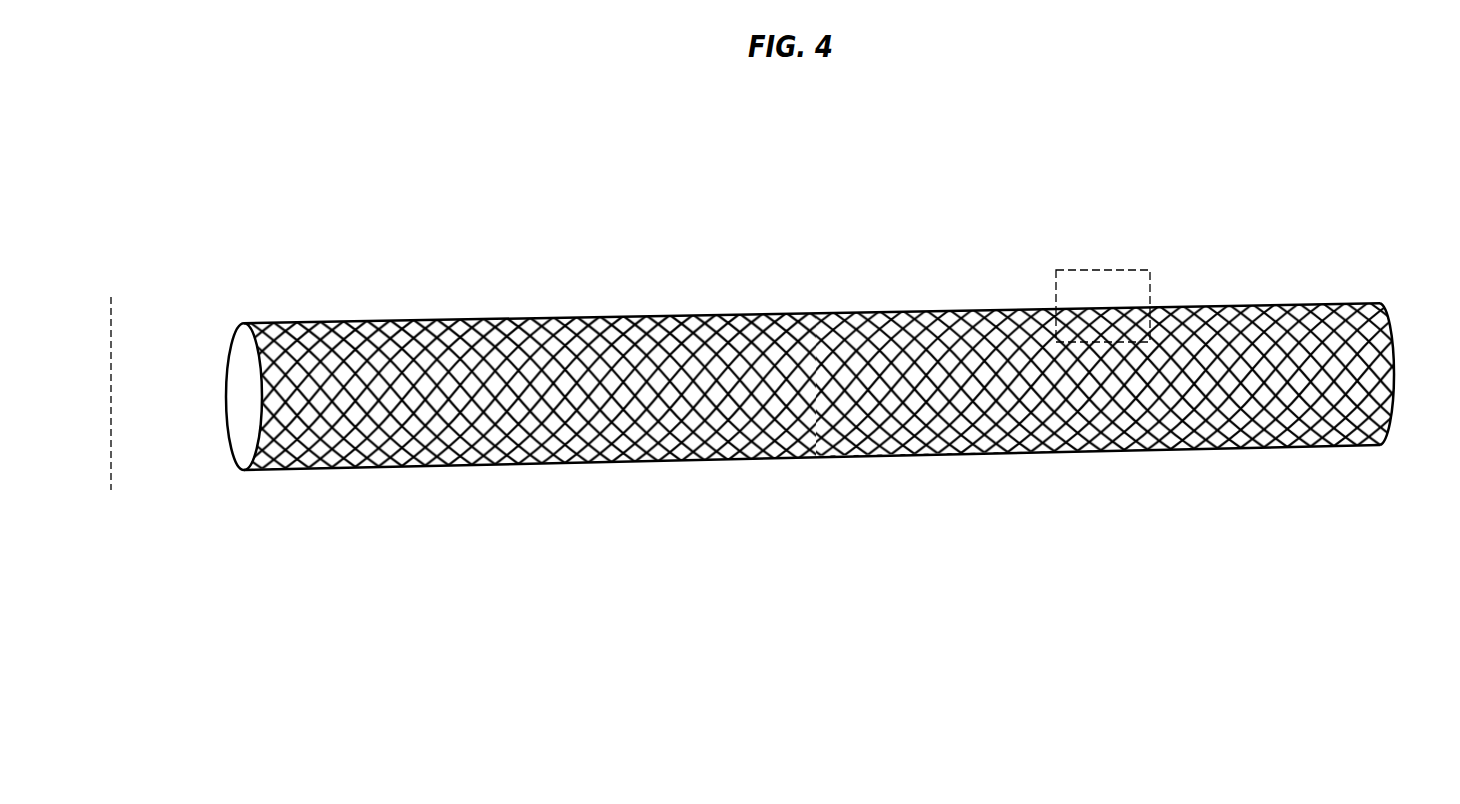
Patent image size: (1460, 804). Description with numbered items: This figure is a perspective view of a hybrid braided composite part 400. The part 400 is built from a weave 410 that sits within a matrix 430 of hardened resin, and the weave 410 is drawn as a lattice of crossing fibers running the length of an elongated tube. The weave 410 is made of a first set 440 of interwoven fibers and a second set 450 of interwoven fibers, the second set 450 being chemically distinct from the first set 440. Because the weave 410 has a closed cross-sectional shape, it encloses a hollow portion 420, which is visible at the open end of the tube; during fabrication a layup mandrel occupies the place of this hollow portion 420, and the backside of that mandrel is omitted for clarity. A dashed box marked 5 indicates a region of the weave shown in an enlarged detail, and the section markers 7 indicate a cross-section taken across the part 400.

The hybrid braided composite part 400 is at (781, 221).
The weave 410 is at (447, 318).
The hollow portion 420 is at (230, 382).
The matrix 430 is at (923, 318).
The first set of interwoven fibers 440 is at (1383, 312).
The second set of interwoven fibers 450 is at (1343, 400).
The detail region shown in FIG. 5 is at (1103, 268).
The section line 7- 7 is at (153, 477).